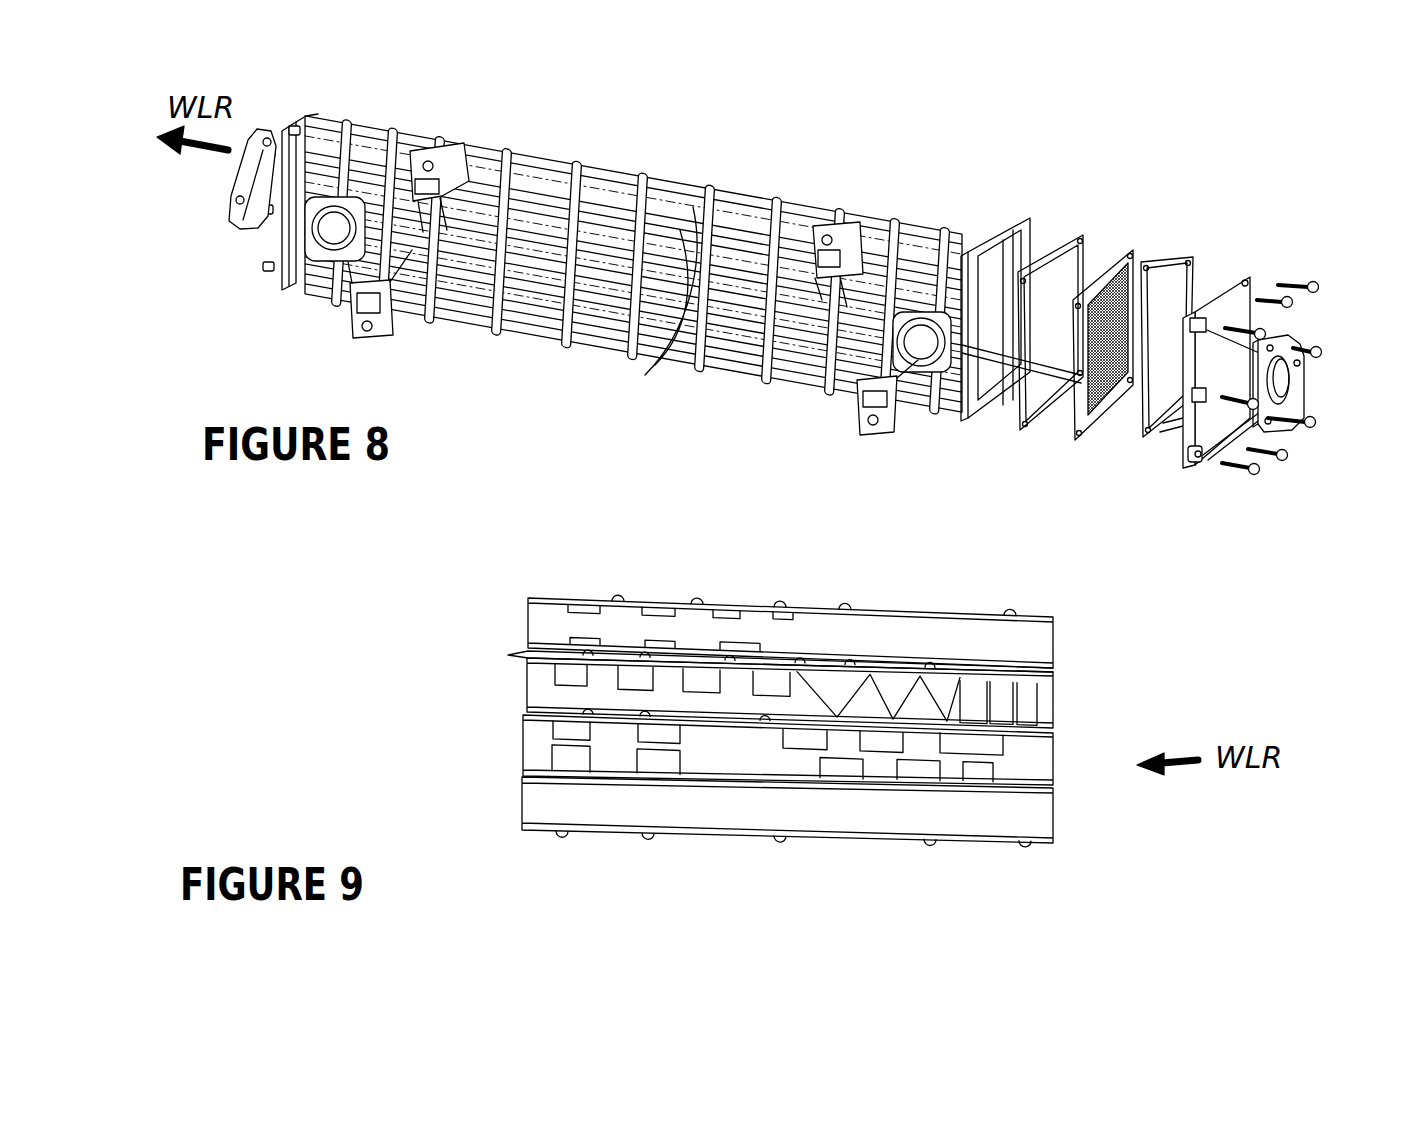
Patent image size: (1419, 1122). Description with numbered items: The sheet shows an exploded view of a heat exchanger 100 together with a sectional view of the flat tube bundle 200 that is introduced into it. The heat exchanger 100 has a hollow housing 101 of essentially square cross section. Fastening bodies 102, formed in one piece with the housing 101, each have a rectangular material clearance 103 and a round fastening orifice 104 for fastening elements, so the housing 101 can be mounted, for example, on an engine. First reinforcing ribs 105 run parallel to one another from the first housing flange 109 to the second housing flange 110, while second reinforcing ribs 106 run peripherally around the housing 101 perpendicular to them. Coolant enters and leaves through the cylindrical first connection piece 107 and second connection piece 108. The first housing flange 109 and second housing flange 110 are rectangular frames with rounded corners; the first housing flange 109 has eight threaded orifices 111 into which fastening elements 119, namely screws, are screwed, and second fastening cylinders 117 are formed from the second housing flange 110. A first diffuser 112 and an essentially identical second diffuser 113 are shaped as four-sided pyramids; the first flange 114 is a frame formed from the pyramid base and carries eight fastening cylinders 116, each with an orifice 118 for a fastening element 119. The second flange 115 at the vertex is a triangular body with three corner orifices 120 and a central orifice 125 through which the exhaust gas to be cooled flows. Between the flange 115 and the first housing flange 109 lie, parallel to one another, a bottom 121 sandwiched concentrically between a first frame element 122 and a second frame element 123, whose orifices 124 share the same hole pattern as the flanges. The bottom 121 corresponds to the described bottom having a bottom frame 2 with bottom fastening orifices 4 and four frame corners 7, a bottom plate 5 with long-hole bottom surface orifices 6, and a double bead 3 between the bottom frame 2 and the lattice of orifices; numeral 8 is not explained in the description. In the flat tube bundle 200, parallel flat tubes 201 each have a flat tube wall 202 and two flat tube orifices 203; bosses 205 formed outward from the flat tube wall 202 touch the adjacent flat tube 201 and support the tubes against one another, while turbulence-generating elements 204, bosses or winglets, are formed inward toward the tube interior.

In FIG. 8, the heat exchanger 100 is at (774, 316).
In FIG. 8, the housing 101 is at (572, 183).
In FIG. 8, the fastening body 102 is at (457, 160).
In FIG. 8, the material clearance 103 is at (403, 160).
In FIG. 8, the fastening orifice 104 is at (829, 237).
In FIG. 8, the first reinforcing rib 105 is at (677, 200).
In FIG. 8, the second reinforcing rib 106 is at (690, 260).
In FIG. 8, the first connection piece 107 is at (330, 255).
In FIG. 8, the second connection piece 108 is at (922, 366).
In FIG. 8, the first housing flange 109 is at (982, 250).
In FIG. 8, the second housing flange 110 is at (347, 115).
In FIG. 8, the orifice 111 is at (1030, 262).
In FIG. 8, the first diffuser 112 is at (1238, 294).
In FIG. 8, the second diffuser 113 is at (262, 200).
In FIG. 8, the first flange 114 is at (1192, 458).
In FIG. 8, the second flange 115 is at (1301, 424).
In FIG. 8, the fastening cylinder 116 is at (1249, 279).
In FIG. 8, the second fastening cylinder 117 is at (322, 110).
In FIG. 8, the orifice 118 is at (1276, 383).
In FIG. 8, the fastening element 119 is at (1300, 317).
In FIG. 8, the orifice 120 is at (1308, 380).
In FIG. 8, the bottom 121 is at (1117, 268).
In FIG. 8, the first frame element 122 is at (1063, 313).
In FIG. 8, the second frame element 123 is at (1169, 349).
In FIG. 8, the orifice 124 is at (1035, 418).
In FIG. 8, the orifice 125 is at (1290, 389).
In FIG. 8, the bottom frame 2 is at (1139, 262).
In FIG. 8, the double bead 3 is at (1135, 256).
In FIG. 8, the bottom fastening orifice 4 is at (1108, 268).
In FIG. 8, the bottom plate 5 is at (1103, 389).
In FIG. 8, the bottom surface orifice 6 is at (1118, 396).
In FIG. 8, the frame corner 7 is at (1070, 429).
In FIG. 8, the eighth opening 8 is at (1100, 418).
In FIG. 9, the flat tube bundle 200 is at (763, 727).
In FIG. 9, the flat tube 201 is at (940, 617).
In FIG. 9, the flat tube wall 202 is at (547, 597).
In FIG. 9, the flat tube orifice 203 is at (530, 622).
In FIG. 9, the turbulence-generating element 204 is at (743, 620).
In FIG. 9, the boss 205 is at (690, 593).